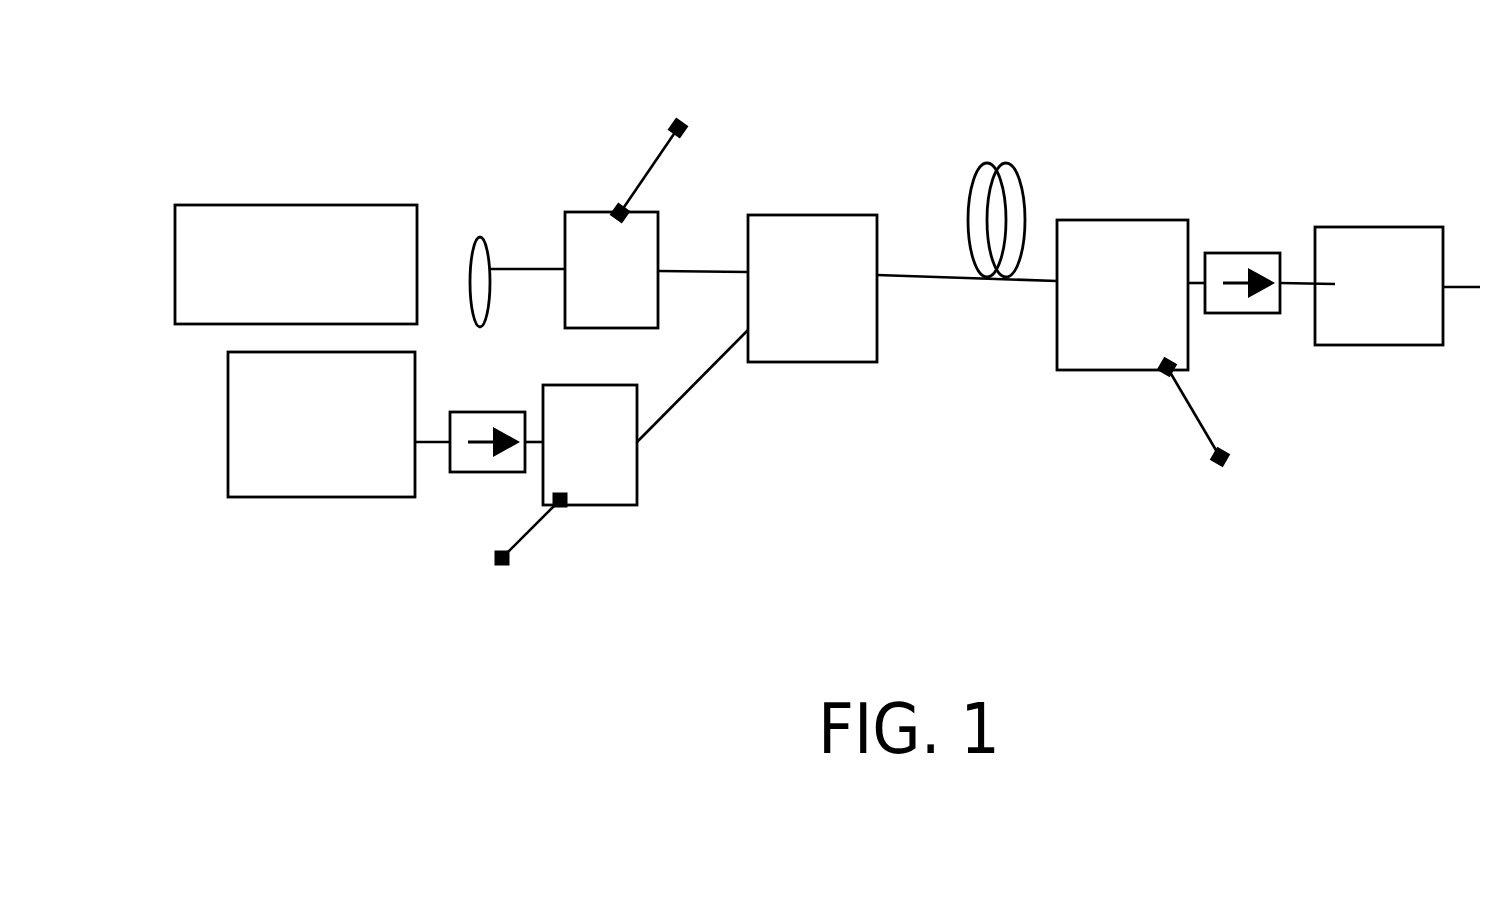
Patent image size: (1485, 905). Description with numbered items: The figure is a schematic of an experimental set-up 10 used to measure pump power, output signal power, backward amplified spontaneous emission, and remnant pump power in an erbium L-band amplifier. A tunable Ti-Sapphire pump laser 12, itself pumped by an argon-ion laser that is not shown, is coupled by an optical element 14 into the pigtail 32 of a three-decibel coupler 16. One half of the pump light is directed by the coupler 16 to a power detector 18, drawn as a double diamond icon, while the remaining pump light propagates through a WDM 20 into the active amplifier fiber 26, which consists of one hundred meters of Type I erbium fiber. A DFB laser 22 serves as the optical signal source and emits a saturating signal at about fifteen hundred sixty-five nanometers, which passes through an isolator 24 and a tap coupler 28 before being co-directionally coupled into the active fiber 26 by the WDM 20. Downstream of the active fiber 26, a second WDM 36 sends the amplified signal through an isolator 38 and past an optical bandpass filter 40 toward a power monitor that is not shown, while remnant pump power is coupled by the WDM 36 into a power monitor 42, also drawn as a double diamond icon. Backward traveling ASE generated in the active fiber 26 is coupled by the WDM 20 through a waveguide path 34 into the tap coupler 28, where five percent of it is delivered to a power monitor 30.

The optical signal processing system 10 is at (947, 224).
The tunable Ti-Sapphire pump laser 12 is at (296, 215).
The optical element 14 is at (494, 259).
The 3 dB coupler 16 is at (611, 231).
The power detector 18 is at (692, 150).
The WDM 20 is at (812, 241).
The DFB laser 22 is at (321, 458).
The isolator 24 is at (488, 466).
The active amplifier fiber 26 is at (998, 188).
The tap coupler 28 is at (636, 448).
The power monitor 30 is at (538, 554).
The pigtail 32 is at (528, 302).
The waveguide path 34 is at (704, 386).
The WDM 36 is at (1134, 264).
The isolator 38 is at (1253, 254).
The optical bandpass filter 40 is at (1382, 253).
The power monitor 42 is at (1217, 438).